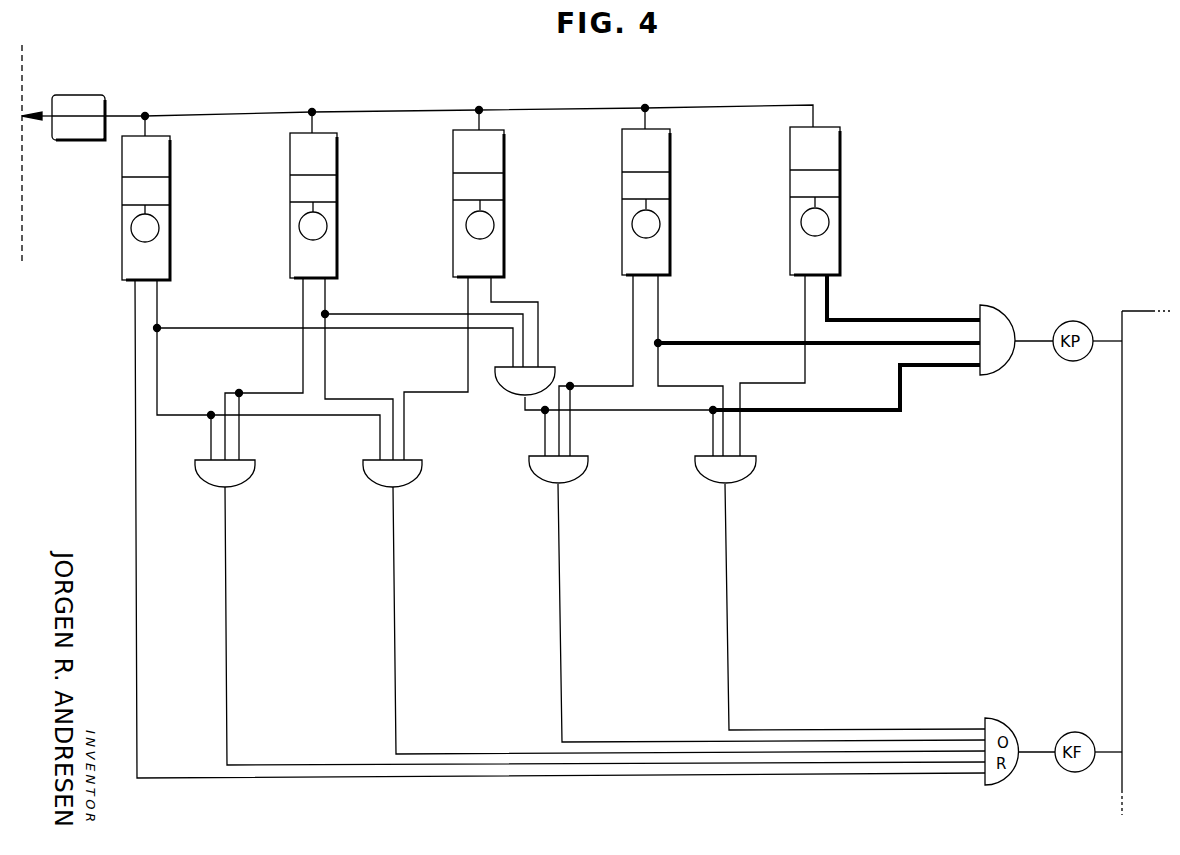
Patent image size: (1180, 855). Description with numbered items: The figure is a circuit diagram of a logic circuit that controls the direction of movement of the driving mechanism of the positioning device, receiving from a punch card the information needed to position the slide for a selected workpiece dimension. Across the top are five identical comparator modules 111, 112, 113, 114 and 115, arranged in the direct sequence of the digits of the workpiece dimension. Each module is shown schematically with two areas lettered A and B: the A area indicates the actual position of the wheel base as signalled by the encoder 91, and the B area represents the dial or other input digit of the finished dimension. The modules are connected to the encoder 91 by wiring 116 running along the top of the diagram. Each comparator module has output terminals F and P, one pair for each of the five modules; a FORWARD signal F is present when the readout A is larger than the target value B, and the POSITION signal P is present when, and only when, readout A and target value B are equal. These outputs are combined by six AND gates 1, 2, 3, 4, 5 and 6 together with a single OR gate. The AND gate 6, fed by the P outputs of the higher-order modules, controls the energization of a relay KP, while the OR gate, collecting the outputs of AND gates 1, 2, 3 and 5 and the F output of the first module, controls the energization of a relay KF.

The encoder 91 is at (82, 97).
The comparator module 111 is at (170, 153).
The comparator module 112 is at (337, 145).
The comparator module 113 is at (504, 141).
The comparator module 114 is at (670, 140).
The comparator module 115 is at (840, 138).
The wiring 116 is at (404, 112).
The AND gate 1 is at (590, 612).
The AND gate 2 is at (674, 607).
The AND gate 3 is at (757, 599).
The AND gate 4 is at (525, 391).
The AND gate 5 is at (840, 593).
The AND gate 6 is at (1001, 346).